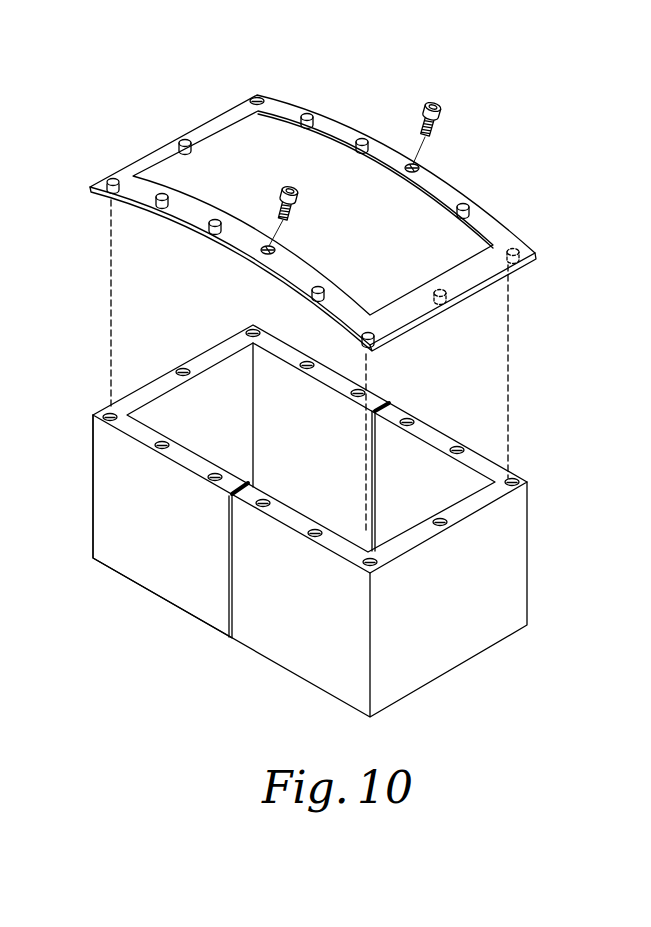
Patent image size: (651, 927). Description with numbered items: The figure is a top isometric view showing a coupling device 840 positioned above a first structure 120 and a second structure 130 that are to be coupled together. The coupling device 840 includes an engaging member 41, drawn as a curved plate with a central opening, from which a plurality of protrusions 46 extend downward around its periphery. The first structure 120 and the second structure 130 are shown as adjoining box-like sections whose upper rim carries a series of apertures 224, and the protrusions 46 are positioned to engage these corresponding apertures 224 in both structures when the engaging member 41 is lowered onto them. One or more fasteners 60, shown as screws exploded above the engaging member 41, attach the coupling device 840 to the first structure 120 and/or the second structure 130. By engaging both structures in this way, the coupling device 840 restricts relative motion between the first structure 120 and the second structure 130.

The coupling device 840 is at (313, 80).
The engaging member 41 is at (536, 258).
The protrusions 46 is at (161, 206).
The fasteners 60 is at (299, 191).
The first structure 120 is at (528, 523).
The second structure 130 is at (91, 508).
The apertures 224 is at (247, 333).